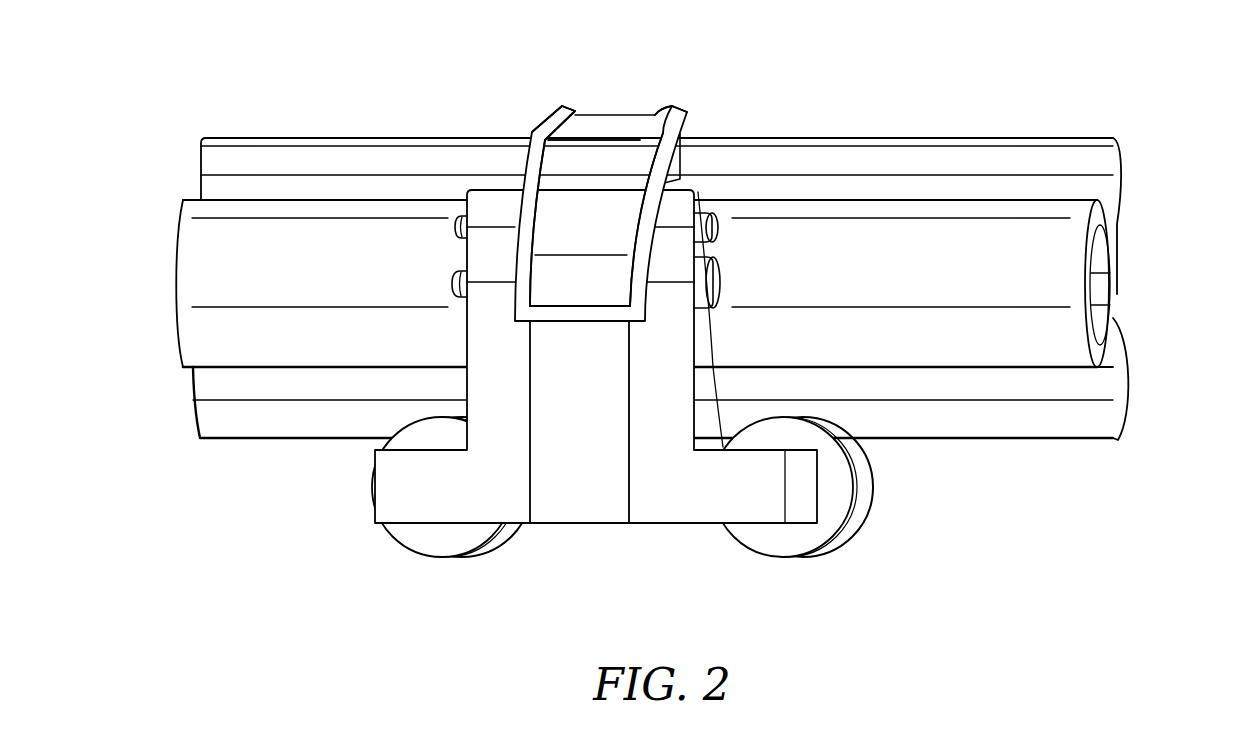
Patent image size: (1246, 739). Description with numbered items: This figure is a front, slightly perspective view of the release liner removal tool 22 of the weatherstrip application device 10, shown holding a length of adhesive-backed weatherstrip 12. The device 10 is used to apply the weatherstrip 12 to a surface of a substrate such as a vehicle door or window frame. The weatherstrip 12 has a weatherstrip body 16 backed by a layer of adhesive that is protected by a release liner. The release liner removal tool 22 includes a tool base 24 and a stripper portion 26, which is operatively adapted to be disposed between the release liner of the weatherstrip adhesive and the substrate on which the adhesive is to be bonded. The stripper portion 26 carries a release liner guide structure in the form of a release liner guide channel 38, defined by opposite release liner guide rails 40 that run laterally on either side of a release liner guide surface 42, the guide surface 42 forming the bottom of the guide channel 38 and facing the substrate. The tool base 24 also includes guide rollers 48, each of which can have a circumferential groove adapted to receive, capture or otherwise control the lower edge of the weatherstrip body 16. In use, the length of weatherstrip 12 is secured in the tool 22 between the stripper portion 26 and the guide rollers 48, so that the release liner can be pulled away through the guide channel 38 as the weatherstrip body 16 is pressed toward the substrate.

The weatherstrip application device 10 is at (474, 599).
The weatherstrip 12 is at (1162, 388).
The weatherstrip body 16 is at (195, 266).
The release liner removal tool 22 is at (465, 341).
The tool base 24 is at (587, 527).
The stripper portion 26 is at (668, 158).
The release liner guide channel 38 is at (612, 113).
The release liner guide rails 40 is at (545, 122).
The release liner guide surface 42 is at (600, 196).
The guide rollers 48 is at (412, 551).